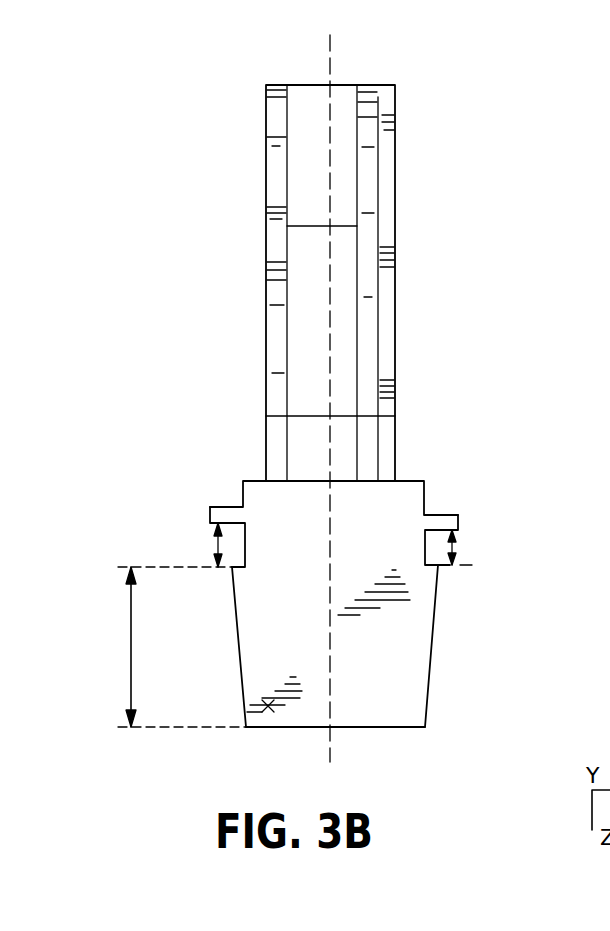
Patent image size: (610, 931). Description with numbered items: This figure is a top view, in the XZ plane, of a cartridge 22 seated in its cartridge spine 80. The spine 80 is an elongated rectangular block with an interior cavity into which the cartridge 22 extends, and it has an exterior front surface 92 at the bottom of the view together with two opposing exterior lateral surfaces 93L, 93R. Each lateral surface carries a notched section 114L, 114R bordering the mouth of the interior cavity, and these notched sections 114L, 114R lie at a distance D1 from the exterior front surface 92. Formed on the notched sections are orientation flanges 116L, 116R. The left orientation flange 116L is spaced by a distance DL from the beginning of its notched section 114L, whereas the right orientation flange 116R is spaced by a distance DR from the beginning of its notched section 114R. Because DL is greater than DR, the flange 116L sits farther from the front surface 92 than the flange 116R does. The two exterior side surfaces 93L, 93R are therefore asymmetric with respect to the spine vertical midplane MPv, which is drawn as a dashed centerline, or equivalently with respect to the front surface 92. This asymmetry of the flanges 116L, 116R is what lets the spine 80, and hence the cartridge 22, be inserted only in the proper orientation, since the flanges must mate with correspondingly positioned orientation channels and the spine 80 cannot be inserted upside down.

The spine vertical midplane MPv is at (331, 64).
The cartridge 22 is at (380, 183).
The notched section 114L is at (187, 502).
The notched section 114R is at (437, 502).
The orientation flange 116L is at (210, 513).
The orientation flange 116R is at (458, 518).
The distance DL is at (214, 545).
The distance DR is at (455, 548).
The distance D1 is at (168, 647).
The exterior lateral surface 93L is at (237, 648).
The exterior lateral surface 93R is at (436, 617).
The cartridge spine 80 is at (390, 676).
The exterior front surface 92 is at (300, 729).